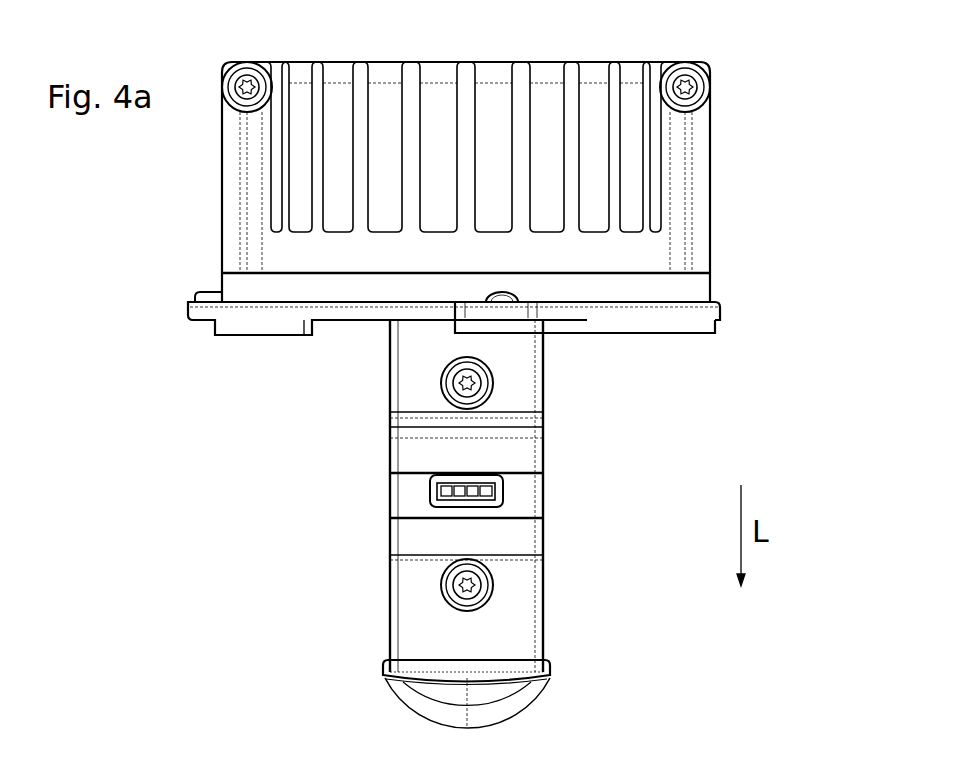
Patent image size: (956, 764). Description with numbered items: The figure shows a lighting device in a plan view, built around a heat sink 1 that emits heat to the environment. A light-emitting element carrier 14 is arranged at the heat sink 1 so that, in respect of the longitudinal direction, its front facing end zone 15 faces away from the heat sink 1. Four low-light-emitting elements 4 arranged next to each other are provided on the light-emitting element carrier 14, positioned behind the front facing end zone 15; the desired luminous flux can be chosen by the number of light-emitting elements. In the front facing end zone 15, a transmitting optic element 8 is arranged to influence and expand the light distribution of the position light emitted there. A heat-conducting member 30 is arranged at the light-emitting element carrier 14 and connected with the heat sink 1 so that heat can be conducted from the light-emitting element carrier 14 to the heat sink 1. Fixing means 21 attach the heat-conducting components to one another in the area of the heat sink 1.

The heat sink 1 is at (728, 204).
The low-light-emitting element 4 is at (503, 497).
The transmitting optic element 8 is at (520, 698).
The light-emitting element carrier 14 is at (413, 542).
The front facing end zone 15 is at (372, 699).
The fixing means 21 is at (224, 76).
The heat-conducting member 30 is at (408, 617).